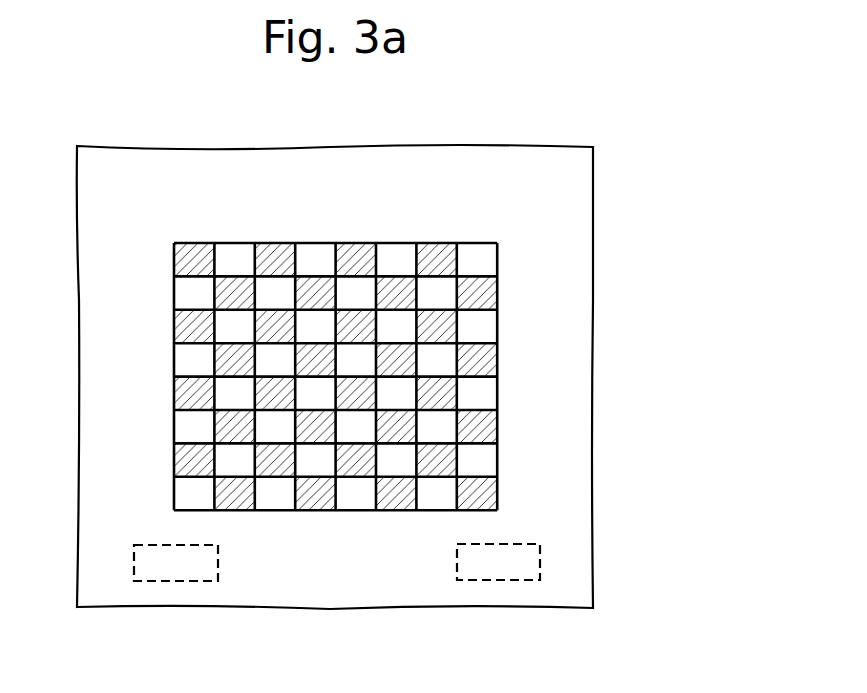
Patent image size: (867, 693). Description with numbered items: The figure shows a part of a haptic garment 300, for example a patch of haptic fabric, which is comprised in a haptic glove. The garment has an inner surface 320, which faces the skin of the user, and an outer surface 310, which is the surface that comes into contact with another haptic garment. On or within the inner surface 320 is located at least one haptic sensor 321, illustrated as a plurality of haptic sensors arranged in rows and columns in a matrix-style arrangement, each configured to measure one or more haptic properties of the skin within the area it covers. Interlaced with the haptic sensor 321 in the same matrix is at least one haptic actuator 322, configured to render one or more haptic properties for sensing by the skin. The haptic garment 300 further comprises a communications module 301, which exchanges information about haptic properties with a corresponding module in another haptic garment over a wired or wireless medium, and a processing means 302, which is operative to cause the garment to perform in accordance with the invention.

The haptic garment 300 is at (524, 130).
The outer surface 310 is at (567, 426).
The inner surface 320 is at (556, 268).
The haptic sensor 321 is at (199, 247).
The haptic actuator 322 is at (237, 250).
The communications module 301 is at (496, 567).
The processing means 302 is at (174, 565).